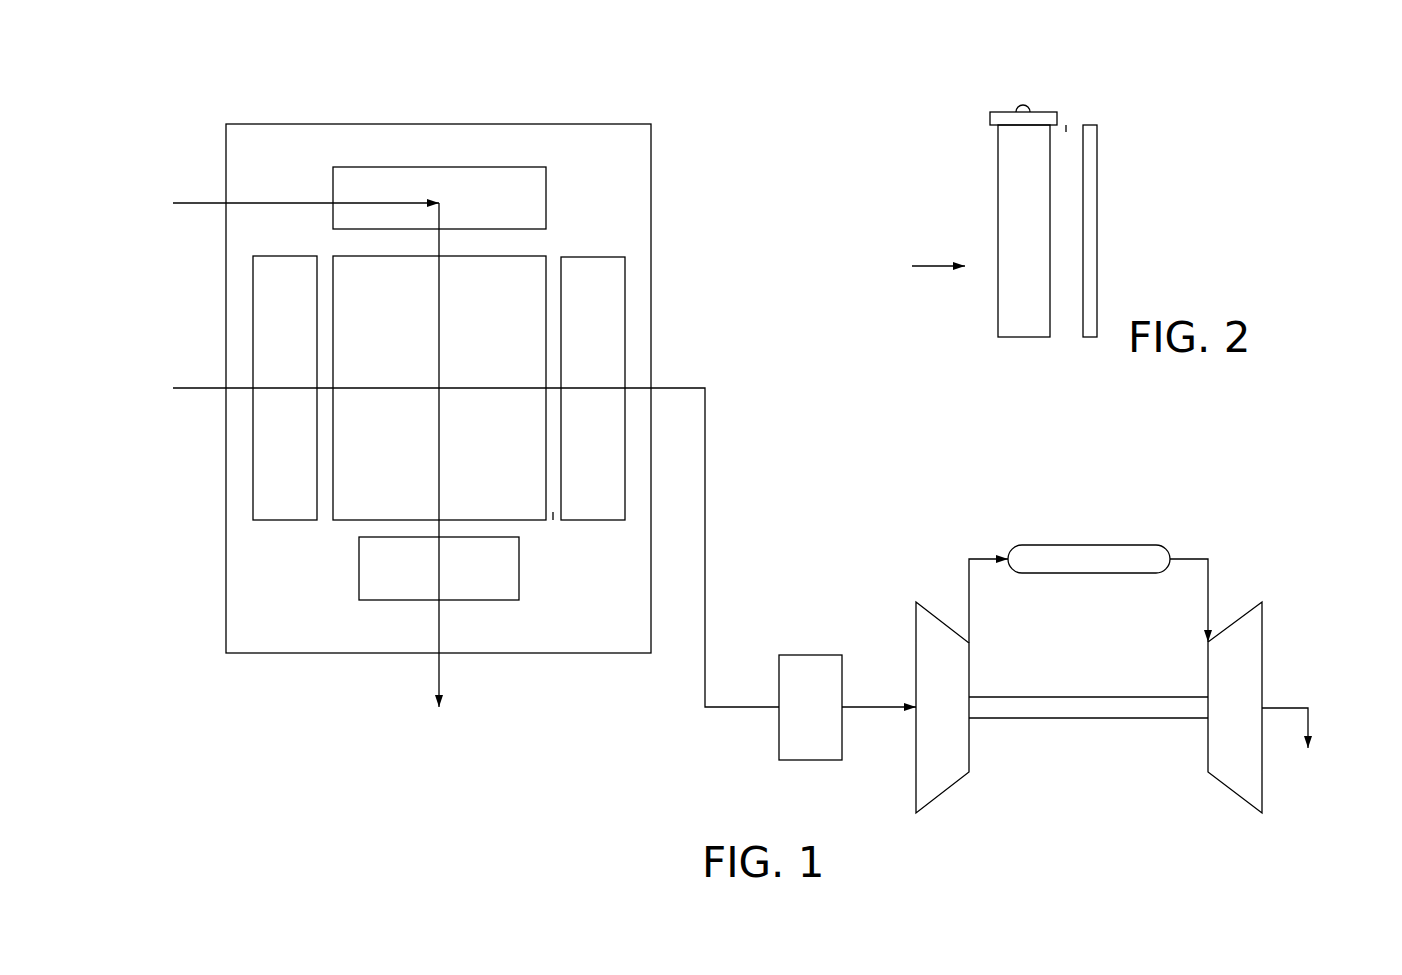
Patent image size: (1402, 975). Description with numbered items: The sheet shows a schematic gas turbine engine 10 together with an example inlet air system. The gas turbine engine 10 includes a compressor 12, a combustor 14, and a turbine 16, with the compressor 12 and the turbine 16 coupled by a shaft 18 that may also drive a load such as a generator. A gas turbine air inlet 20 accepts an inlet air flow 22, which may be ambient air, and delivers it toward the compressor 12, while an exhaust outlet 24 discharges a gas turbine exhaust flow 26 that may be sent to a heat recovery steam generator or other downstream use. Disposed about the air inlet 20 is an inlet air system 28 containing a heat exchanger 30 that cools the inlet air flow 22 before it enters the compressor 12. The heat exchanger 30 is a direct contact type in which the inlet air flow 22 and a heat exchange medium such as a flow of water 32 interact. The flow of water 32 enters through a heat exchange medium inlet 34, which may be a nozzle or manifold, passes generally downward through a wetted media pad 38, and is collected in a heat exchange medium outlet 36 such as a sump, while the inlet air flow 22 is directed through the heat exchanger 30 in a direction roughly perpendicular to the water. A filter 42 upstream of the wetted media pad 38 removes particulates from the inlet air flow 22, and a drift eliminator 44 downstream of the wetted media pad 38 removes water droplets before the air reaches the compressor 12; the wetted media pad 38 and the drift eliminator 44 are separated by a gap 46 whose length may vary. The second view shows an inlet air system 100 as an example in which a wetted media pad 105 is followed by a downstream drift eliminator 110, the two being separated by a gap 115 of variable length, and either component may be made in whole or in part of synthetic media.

In FIG. 1, the gas turbine engine 10 is at (1238, 492).
In FIG. 1, the compressor 12 is at (916, 625).
In FIG. 1, the combustor 14 is at (1078, 545).
In FIG. 1, the turbine 16 is at (1262, 645).
In FIG. 1, the shaft 18 is at (1047, 718).
In FIG. 1, the gas turbine air inlet 20 is at (808, 760).
In FIG. 1, the inlet air flow 22 is at (705, 495).
In FIG. 2, the inlet air flow 22 is at (938, 262).
In FIG. 1, the exhaust outlet 24 is at (1288, 688).
In FIG. 1, the gas turbine exhaust flow 26 is at (1308, 735).
In FIG. 1, the inlet air system 28 is at (697, 175).
In FIG. 1, the heat exchanger 30 is at (543, 252).
In FIG. 1, the flow of water 32 is at (279, 200).
In FIG. 1, the heat exchange medium inlet 34 is at (492, 167).
In FIG. 1, the heat exchange medium outlet 36 is at (477, 600).
In FIG. 1, the wetted media pad 38 is at (353, 520).
In FIG. 1, the filter 42 is at (252, 468).
In FIG. 1, the drift eliminator 44 is at (626, 308).
In FIG. 1, the gap 46 is at (553, 512).
In FIG. 2, the inlet air system 100 is at (945, 92).
In FIG. 2, the wetted media pad 105 is at (998, 205).
In FIG. 2, the drift eliminator 110 is at (1097, 205).
In FIG. 2, the gap 115 is at (1066, 132).